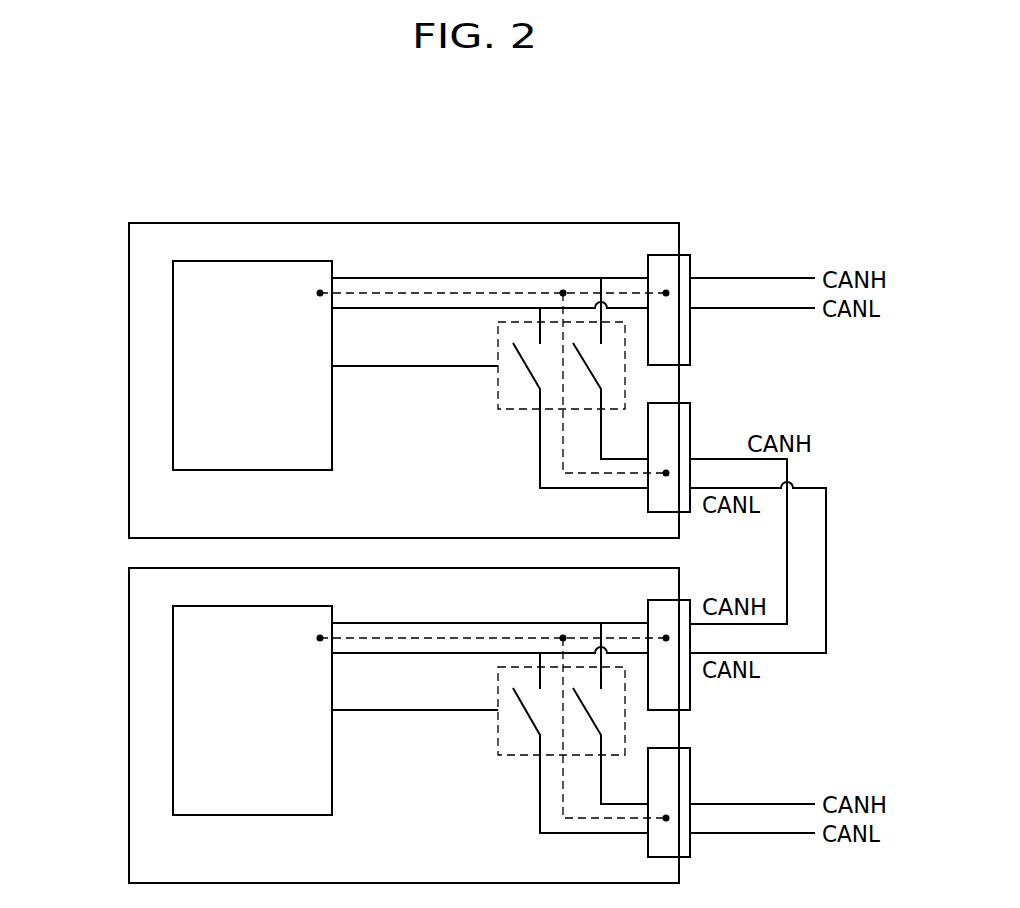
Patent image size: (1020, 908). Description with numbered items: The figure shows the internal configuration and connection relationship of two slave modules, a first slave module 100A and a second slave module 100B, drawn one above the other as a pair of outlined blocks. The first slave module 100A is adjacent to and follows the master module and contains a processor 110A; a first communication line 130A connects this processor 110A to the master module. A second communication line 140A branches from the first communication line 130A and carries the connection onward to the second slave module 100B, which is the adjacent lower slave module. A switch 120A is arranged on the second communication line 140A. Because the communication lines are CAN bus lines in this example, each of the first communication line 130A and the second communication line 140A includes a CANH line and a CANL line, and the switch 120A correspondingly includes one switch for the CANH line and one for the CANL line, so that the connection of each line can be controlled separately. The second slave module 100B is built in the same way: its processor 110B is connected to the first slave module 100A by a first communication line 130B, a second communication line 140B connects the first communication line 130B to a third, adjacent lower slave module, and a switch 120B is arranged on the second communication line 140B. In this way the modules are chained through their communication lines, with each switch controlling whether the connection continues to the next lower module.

The first slave module 100A is at (128, 380).
The processor 110A is at (252, 470).
The switch 120A is at (498, 338).
The first communication line 130A is at (447, 293).
The second communication line 140A is at (563, 443).
The second slave module 100B is at (128, 725).
The processor 110B is at (252, 815).
The switch 120B is at (498, 683).
The first communication line 130B is at (447, 638).
The second communication line 140B is at (563, 788).